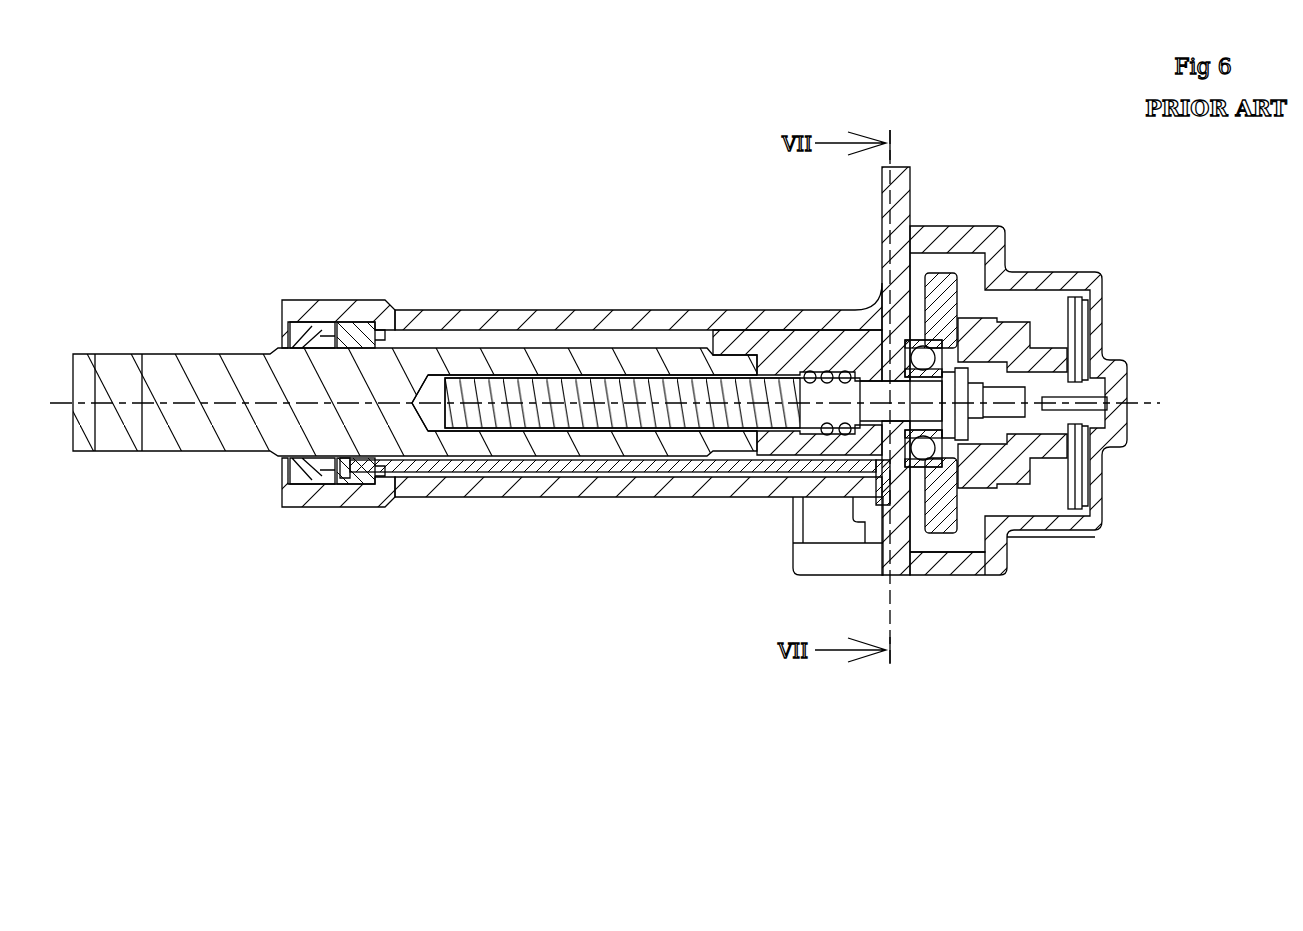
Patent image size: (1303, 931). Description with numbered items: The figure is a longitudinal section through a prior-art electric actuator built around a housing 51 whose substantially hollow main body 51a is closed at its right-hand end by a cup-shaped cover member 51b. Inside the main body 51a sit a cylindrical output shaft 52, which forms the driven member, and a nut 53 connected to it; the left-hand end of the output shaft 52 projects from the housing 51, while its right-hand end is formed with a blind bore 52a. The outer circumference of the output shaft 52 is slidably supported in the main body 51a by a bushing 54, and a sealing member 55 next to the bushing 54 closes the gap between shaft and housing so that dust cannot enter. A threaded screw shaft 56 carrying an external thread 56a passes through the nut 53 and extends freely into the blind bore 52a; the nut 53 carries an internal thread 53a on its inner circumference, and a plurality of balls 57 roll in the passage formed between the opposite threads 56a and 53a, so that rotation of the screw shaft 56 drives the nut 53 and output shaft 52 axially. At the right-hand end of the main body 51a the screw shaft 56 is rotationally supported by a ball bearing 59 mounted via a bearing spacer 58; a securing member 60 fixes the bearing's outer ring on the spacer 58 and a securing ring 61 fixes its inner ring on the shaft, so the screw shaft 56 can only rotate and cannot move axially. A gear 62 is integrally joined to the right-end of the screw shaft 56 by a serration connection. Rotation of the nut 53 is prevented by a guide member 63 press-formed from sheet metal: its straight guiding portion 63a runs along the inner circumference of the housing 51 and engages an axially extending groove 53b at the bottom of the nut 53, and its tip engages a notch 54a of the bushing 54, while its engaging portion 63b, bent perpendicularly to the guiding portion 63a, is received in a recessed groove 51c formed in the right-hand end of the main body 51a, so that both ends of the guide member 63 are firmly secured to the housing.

The housing 51 is at (1004, 339).
The main body 51a is at (905, 168).
The cup-shaped cover member 51b is at (990, 226).
The recessed groove 51c is at (913, 548).
The output shaft 52 is at (224, 362).
The blind bore 52a is at (572, 378).
The nut 53 is at (788, 355).
The internal thread 53a is at (819, 440).
The axially extending groove 53b is at (770, 467).
The bushing 54 is at (346, 324).
The notch 54a is at (376, 486).
The sealing member 55 is at (302, 324).
The threaded screw shaft 56 is at (430, 378).
The external thread 56a is at (493, 378).
The balls 57 is at (830, 370).
The bearing spacer 58 is at (938, 535).
The ball bearing 59 is at (982, 345).
The securing member 60 is at (945, 300).
The securing ring 61 is at (990, 450).
The gear 62 is at (988, 536).
The guide member 63 is at (675, 490).
The guiding portion 63a is at (583, 468).
The engaging portion 63b is at (887, 497).